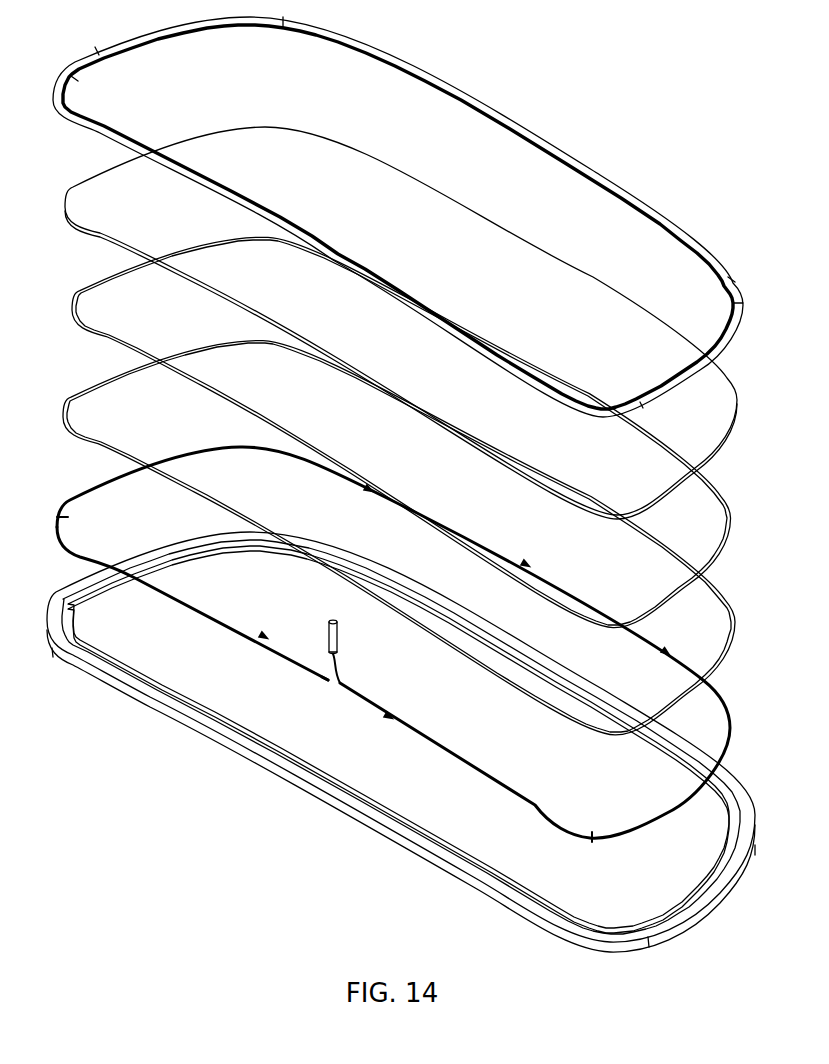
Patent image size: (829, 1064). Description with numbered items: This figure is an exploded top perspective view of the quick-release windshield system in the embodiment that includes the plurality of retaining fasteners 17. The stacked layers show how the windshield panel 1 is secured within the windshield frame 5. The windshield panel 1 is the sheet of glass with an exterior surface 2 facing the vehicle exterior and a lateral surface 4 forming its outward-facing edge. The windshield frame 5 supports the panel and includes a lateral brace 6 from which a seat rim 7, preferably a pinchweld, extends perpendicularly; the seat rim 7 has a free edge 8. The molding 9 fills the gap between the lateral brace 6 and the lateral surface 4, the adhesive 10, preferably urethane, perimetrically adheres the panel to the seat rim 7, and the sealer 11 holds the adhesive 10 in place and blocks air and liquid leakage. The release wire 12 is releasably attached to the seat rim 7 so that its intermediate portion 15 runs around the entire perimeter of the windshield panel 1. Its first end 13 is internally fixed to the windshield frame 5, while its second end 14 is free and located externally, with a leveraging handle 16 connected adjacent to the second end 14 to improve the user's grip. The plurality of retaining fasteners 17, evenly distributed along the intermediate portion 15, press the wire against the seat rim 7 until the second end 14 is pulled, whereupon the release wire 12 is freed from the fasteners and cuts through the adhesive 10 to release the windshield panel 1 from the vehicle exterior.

The windshield panel 1 is at (63, 191).
The exterior surface 2 is at (372, 249).
The lateral surface 4 is at (400, 365).
The windshield frame 5 is at (173, 726).
The lateral brace 6 is at (88, 590).
The seat rim 7 is at (76, 628).
The free edge 8 is at (193, 563).
The molding 9 is at (106, 52).
The adhesive 10 is at (90, 382).
The sealer 11 is at (113, 278).
The release wire 12 is at (68, 498).
The first end 13 is at (328, 681).
The second end 14 is at (338, 658).
The intermediate portion 15 is at (180, 453).
The leveraging handle 16 is at (332, 617).
The plurality of retaining fasteners 17 is at (537, 565).